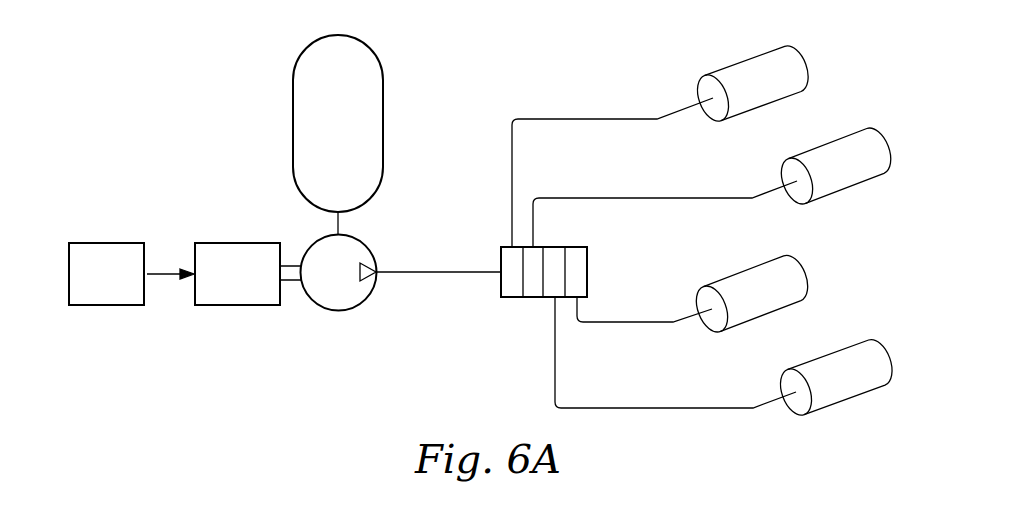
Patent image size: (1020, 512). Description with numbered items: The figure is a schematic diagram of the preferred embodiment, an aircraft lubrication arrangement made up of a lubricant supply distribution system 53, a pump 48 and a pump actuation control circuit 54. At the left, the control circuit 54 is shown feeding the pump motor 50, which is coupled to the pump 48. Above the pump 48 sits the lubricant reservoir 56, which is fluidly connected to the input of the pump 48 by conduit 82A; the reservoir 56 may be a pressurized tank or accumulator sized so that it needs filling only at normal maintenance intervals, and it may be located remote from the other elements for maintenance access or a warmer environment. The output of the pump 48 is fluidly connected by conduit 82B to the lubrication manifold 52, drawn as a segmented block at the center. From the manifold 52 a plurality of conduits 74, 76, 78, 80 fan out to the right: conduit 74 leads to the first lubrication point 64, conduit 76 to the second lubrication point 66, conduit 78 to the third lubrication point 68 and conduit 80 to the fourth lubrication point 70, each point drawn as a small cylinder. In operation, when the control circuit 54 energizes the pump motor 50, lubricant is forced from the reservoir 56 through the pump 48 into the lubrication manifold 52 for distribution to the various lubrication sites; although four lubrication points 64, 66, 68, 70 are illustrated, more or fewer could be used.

The pump 48 is at (358, 306).
The pump motor 50 is at (223, 243).
The lubrication manifold 52 is at (582, 247).
The lubricant supply distribution system 53 is at (451, 148).
The pump actuation control circuit 54 is at (116, 284).
The lubricant reservoir 56 is at (347, 129).
The first lubrication point 64 is at (745, 68).
The second lubrication point 66 is at (828, 150).
The third lubrication point 68 is at (745, 278).
The fourth lubrication point 70 is at (828, 360).
The conduit 74 is at (570, 118).
The conduit 76 is at (655, 197).
The conduit 78 is at (638, 321).
The conduit 80 is at (683, 408).
The conduit 82A is at (342, 229).
The conduit 82B is at (446, 268).